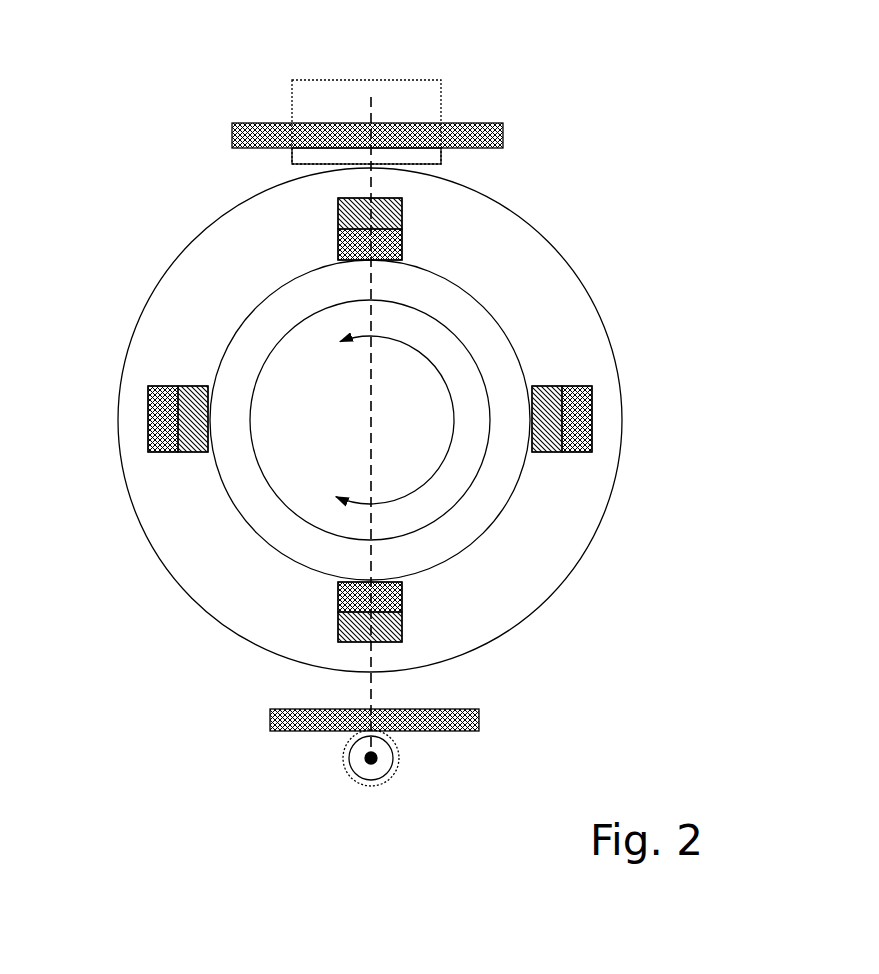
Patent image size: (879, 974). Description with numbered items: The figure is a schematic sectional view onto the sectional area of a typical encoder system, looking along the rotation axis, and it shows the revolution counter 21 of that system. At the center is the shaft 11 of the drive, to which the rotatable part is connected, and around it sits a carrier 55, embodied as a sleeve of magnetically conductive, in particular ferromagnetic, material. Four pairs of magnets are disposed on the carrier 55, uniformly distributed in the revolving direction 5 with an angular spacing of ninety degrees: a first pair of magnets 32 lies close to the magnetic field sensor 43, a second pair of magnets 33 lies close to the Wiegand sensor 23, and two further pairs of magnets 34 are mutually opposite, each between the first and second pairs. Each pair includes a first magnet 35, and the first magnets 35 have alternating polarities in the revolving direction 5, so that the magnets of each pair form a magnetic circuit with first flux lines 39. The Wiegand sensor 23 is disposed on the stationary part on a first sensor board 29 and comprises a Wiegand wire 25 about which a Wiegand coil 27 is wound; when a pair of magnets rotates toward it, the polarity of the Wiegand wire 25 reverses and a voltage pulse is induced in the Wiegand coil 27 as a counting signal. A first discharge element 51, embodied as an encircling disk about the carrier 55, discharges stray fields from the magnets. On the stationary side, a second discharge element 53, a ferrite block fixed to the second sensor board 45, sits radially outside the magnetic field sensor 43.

The revolving direction 5 is at (453, 398).
The shaft 11 is at (255, 382).
The revolution counter 21 is at (147, 710).
The Wiegand sensor 23 is at (329, 769).
The Wiegand wire 25 is at (377, 760).
The Wiegand coil 27 is at (375, 763).
The first sensor board 29 is at (479, 722).
The first pair of magnets 32 is at (402, 215).
The second pair of magnets 33 is at (402, 628).
The further pairs of magnets 34 is at (120, 457).
The first magnet 35 is at (402, 232).
The first flux lines 39 is at (368, 195).
The magnetic field sensor 43 is at (442, 155).
The second sensor board 45 is at (502, 128).
The first discharge element 51 is at (197, 235).
The second discharge element 53 is at (442, 98).
The carrier 55 is at (230, 332).